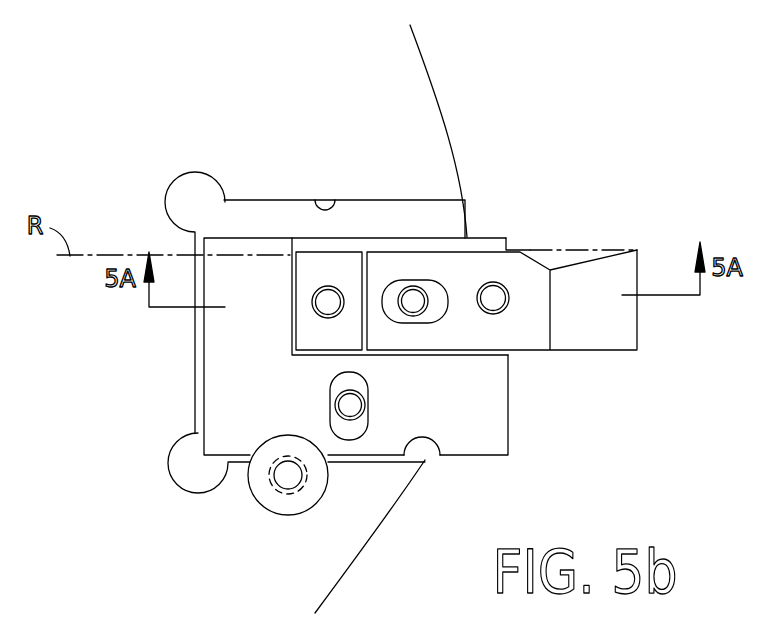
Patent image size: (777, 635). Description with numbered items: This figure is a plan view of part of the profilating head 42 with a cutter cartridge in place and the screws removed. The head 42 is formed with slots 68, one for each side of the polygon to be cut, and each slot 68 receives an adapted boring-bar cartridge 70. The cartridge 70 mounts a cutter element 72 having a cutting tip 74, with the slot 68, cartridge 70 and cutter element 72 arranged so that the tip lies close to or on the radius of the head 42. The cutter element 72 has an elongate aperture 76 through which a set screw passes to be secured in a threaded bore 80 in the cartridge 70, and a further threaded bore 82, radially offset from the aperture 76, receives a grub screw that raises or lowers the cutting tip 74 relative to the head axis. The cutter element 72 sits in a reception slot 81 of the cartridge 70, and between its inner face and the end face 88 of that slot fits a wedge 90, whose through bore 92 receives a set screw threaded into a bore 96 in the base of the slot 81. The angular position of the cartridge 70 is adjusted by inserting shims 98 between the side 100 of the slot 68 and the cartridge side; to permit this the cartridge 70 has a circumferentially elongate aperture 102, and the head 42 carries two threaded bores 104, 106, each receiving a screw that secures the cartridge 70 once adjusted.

The profilating head 42 is at (422, 98).
The slot 68 is at (328, 200).
The boring-bar cartridge 70 is at (500, 423).
The cutter element 72 is at (625, 277).
The cutting tip 74 is at (637, 250).
The elongate aperture 76 is at (438, 305).
The threaded bore 80 is at (405, 305).
The reception slot 81 is at (445, 240).
The threaded bore 82 is at (500, 290).
The end face 88 is at (303, 240).
The wedge 90 is at (308, 272).
The through bore 92 is at (322, 307).
The bore 96 is at (330, 298).
The shims 98 is at (370, 462).
The side 100 is at (442, 440).
The elongate aperture 102 is at (347, 437).
The threaded bore 104 is at (283, 476).
The threaded bore 106 is at (340, 408).